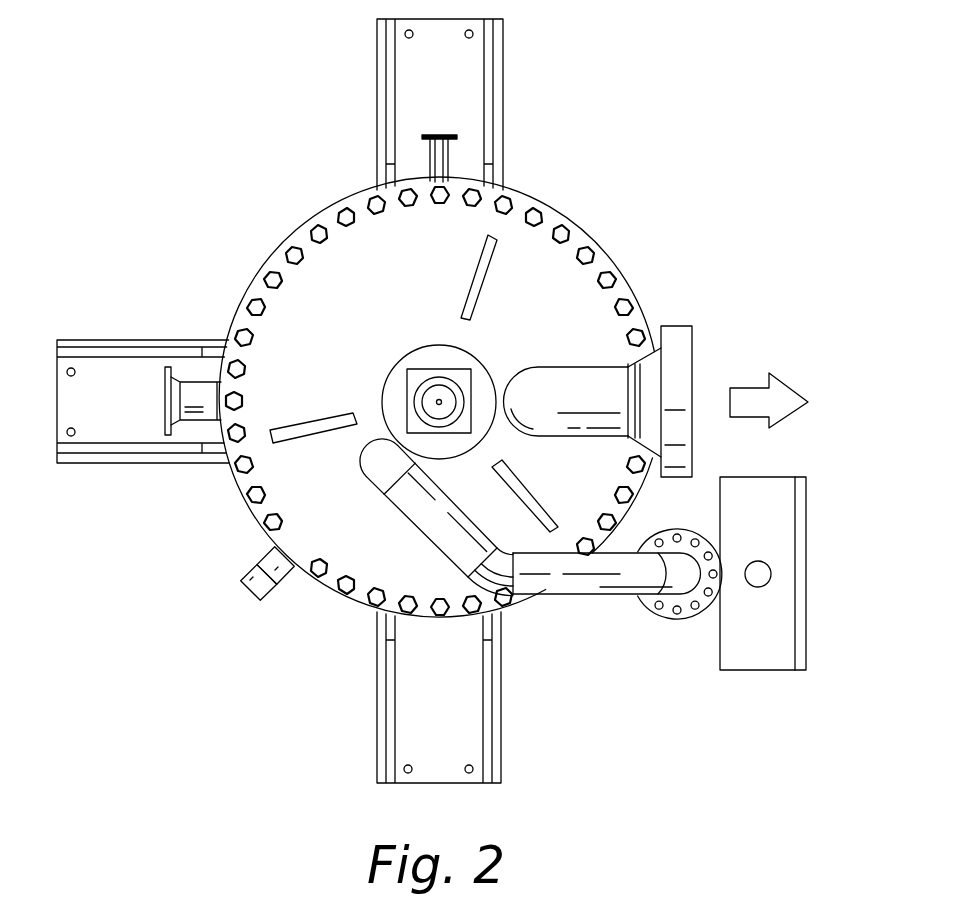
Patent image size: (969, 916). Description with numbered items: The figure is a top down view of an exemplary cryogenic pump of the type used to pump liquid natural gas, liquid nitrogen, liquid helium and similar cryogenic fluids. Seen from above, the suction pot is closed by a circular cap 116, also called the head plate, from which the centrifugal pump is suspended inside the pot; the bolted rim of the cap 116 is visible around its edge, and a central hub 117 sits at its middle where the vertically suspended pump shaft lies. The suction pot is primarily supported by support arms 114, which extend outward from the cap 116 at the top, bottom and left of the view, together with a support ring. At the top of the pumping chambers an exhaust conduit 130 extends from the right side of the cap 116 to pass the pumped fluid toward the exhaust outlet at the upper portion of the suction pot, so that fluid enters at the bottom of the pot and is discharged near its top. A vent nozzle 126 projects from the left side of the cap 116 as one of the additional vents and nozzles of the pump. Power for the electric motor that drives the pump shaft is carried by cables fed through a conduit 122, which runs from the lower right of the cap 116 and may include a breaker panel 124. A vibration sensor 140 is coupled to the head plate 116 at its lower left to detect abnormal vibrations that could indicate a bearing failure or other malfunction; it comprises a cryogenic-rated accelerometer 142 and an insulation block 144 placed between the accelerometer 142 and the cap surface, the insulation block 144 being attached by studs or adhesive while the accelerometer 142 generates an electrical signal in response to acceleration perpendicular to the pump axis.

The support arms 114 is at (455, 93).
The cap 116 is at (312, 280).
The central hub 117 is at (427, 367).
The conduit 122 is at (765, 561).
The breaker panel 124 is at (760, 632).
The vent nozzle 126 is at (198, 390).
The exhaust conduit 130 is at (670, 375).
The vibration sensor 140 is at (225, 619).
The cryogenic-rated accelerometer 142 is at (250, 578).
The insulation block 144 is at (282, 573).